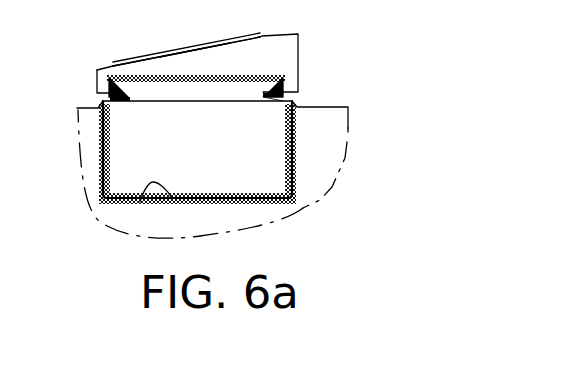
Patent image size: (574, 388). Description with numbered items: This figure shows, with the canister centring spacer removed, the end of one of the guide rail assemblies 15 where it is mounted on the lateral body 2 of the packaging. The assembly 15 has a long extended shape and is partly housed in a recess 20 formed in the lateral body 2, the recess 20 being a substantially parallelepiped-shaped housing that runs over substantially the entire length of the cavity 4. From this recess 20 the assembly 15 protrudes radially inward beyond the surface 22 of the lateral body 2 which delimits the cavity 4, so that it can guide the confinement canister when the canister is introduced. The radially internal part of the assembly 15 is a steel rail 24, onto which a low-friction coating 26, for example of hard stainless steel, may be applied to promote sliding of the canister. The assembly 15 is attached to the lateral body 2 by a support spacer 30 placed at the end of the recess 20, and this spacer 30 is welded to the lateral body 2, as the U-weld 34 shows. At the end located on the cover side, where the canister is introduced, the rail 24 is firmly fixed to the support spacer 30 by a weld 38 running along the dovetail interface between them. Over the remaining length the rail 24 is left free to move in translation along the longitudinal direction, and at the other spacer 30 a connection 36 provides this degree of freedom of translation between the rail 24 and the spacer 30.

The lateral body 2 is at (303, 208).
The cavity 4 is at (195, 45).
The assembly 15 is at (207, 55).
The recess 20 is at (148, 188).
The surface 22 is at (96, 107).
The rail 24 is at (228, 43).
The low-friction coating 26 is at (161, 57).
The support spacer 30 is at (258, 135).
The U-weld 34 is at (292, 148).
The connection 36 is at (259, 88).
The weld 38 is at (257, 75).